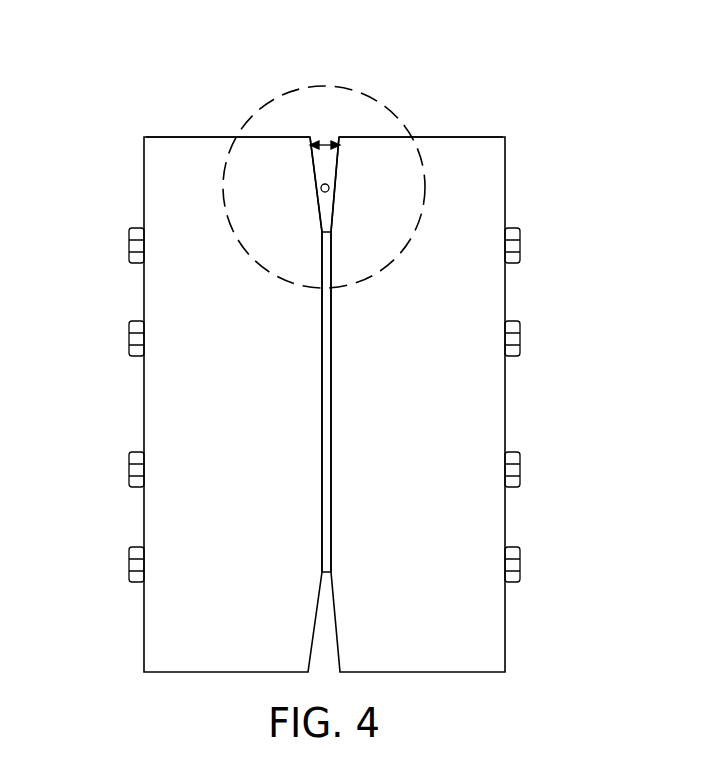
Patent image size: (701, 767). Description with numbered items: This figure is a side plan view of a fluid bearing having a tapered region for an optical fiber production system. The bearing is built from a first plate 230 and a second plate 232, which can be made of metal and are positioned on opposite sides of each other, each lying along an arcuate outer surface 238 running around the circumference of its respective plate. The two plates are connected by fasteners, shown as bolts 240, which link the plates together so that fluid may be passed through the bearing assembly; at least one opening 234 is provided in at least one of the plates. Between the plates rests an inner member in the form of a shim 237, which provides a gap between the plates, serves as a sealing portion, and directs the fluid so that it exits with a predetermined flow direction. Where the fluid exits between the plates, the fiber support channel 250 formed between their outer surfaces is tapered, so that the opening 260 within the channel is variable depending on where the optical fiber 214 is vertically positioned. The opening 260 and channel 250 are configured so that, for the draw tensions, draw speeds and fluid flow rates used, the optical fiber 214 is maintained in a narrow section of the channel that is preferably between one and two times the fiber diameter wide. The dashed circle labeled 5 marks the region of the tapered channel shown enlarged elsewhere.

The first plate 230 is at (142, 202).
The second plate 232 is at (505, 201).
The arcuate outer surface 238 is at (198, 136).
The opening 234 is at (487, 136).
The bolts 240 is at (521, 246).
The fiber support channel 250 is at (335, 135).
The opening 260 is at (325, 142).
The shim 237 is at (328, 233).
The optical fiber 214 is at (330, 188).
The detail circle for FIG. 5 is at (393, 110).